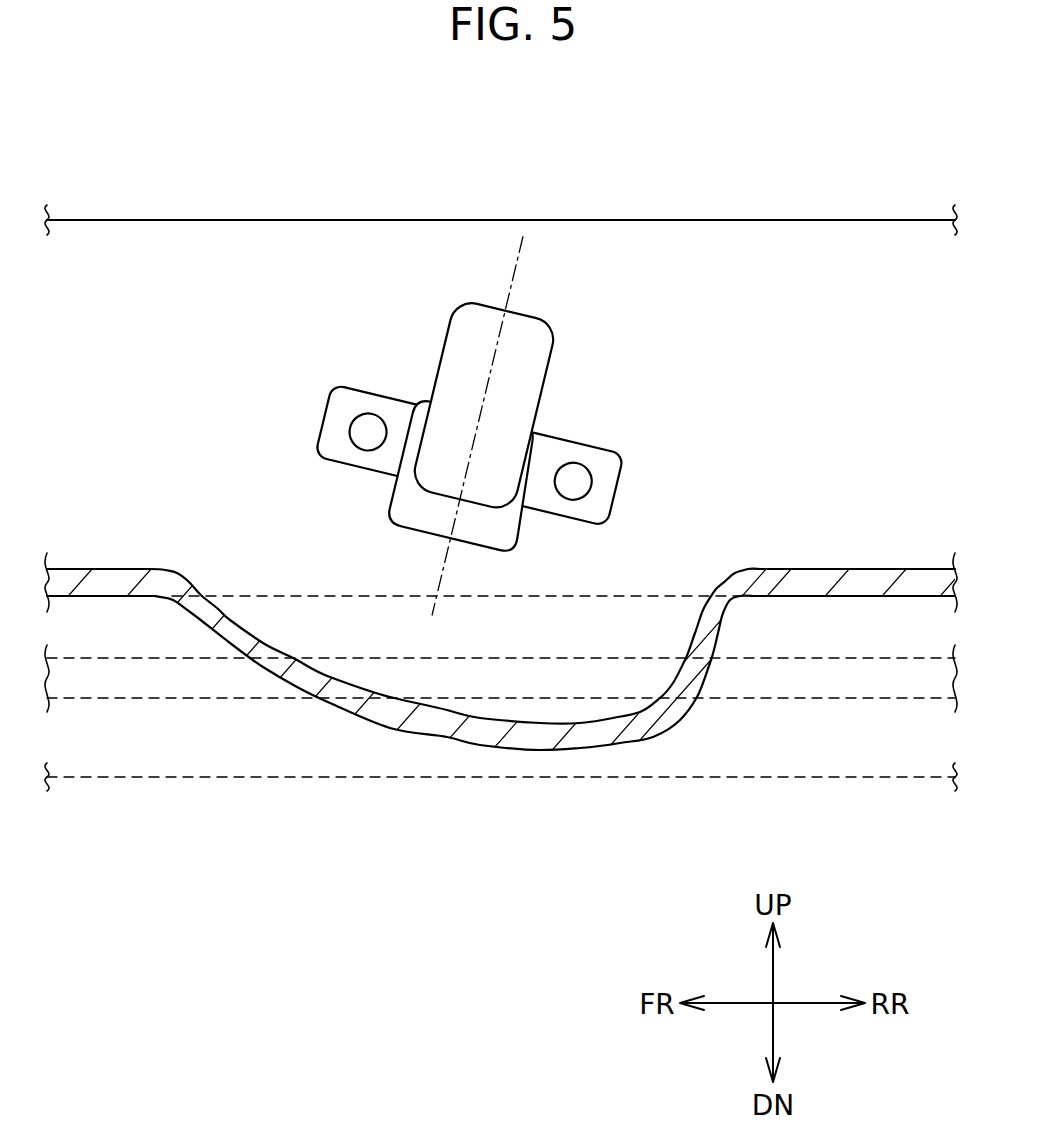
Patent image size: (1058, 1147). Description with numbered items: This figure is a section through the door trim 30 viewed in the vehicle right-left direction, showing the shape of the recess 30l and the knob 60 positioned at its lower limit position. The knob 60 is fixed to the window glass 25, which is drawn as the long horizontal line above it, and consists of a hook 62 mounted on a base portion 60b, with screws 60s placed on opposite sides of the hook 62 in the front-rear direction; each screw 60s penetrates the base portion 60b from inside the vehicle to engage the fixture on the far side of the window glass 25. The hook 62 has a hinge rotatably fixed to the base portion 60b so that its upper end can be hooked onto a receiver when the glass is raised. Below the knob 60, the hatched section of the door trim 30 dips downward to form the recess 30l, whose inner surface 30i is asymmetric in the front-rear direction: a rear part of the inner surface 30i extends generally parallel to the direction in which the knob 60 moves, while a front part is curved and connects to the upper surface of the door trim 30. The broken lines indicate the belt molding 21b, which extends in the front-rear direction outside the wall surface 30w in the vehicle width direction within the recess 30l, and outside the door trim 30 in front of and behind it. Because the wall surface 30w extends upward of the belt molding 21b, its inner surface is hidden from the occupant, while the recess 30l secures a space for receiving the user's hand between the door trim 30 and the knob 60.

The window glass 25 is at (128, 221).
The knob 60 is at (474, 370).
The hook 62 is at (475, 330).
The screw 60s is at (362, 433).
The base portion 60b is at (533, 463).
The belt molding 21b is at (265, 592).
The wall surface 30w is at (344, 585).
The recess 30l is at (648, 582).
The door trim 30 is at (490, 661).
The inner surface 30i is at (500, 715).